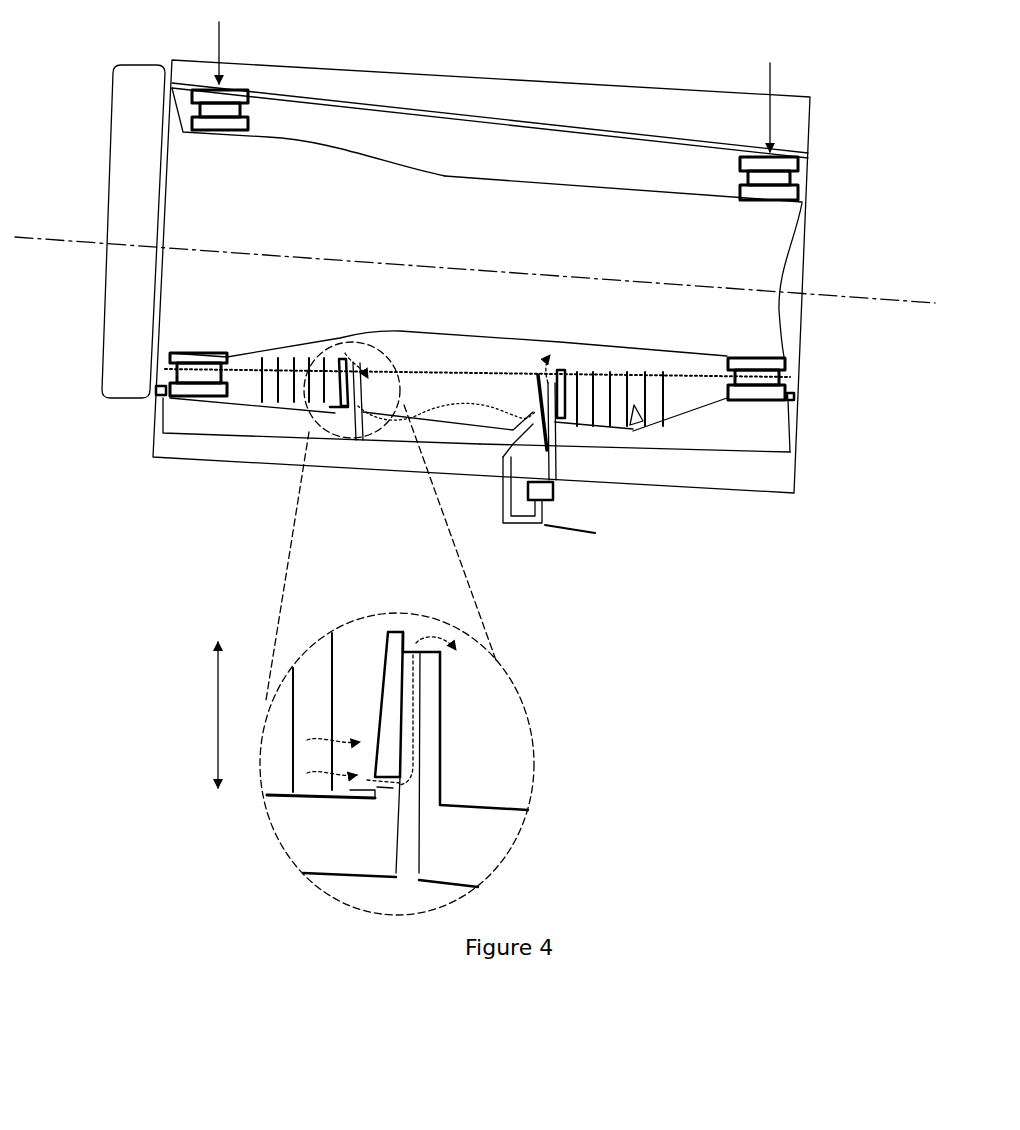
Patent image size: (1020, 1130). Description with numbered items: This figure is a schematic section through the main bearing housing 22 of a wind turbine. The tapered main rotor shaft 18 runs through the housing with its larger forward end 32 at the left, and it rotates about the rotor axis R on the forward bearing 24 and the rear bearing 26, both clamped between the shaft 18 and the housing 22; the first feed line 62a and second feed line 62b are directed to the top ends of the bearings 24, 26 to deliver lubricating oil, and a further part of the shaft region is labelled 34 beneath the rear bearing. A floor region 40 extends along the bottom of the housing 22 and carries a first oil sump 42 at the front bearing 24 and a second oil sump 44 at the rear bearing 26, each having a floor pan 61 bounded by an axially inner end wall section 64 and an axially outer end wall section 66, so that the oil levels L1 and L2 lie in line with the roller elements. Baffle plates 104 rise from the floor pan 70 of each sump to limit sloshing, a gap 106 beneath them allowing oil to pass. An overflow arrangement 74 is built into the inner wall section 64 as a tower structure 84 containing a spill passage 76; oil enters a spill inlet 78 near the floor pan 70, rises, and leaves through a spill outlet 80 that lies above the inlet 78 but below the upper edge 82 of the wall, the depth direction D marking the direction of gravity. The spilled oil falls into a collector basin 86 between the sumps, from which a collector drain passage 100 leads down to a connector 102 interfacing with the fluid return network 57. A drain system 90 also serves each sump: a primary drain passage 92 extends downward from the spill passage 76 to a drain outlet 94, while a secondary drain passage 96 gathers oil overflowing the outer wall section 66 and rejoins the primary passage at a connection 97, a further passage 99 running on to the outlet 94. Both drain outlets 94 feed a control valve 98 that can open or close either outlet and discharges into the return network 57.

The main rotor shaft 18 is at (473, 183).
The main bearing housing 22 is at (648, 88).
The forward bearing 24 is at (210, 145).
The rear bearing 26 is at (760, 210).
The forward end of the shaft 32 is at (98, 388).
The lower wall of cover plate 34 is at (717, 203).
The floor region 40 is at (830, 428).
The first oil sump 42 is at (280, 428).
The second oil sump 44 is at (698, 422).
The fluid return network 57 is at (573, 531).
The floor pan 61 is at (254, 376).
The first feed line 62a is at (218, 34).
The second feed line 62b is at (768, 70).
The axially inner end wall section 64 is at (350, 338).
The axially outer end wall section 66 is at (166, 380).
The floor pan of the sump 70 is at (638, 410).
The overflow arrangement 74 is at (458, 713).
The spill passage 76 is at (441, 755).
The spill inlet 78 is at (373, 790).
The spill outlet 80 is at (437, 660).
The upper edge of the inner side wall section 82 is at (397, 628).
The tower structure 84 is at (443, 784).
The collector basin 86 is at (422, 396).
The drain system 90 is at (405, 498).
The primary drain passage 92 is at (362, 440).
The drain outlet 94 is at (558, 458).
The secondary drain passage 96 is at (156, 395).
The connection 97 is at (343, 436).
The control valve 98 is at (551, 505).
The further passage 99 is at (453, 496).
The collector drain passage 100 is at (500, 398).
The connector 102 is at (502, 492).
The baffle plates 104 is at (287, 345).
The gap 106 is at (268, 797).
The oil level in the first oil sump L1 is at (260, 366).
The oil level in the second oil sump L2 is at (688, 373).
The rotor axis R is at (475, 294).
The depth direction D is at (199, 715).